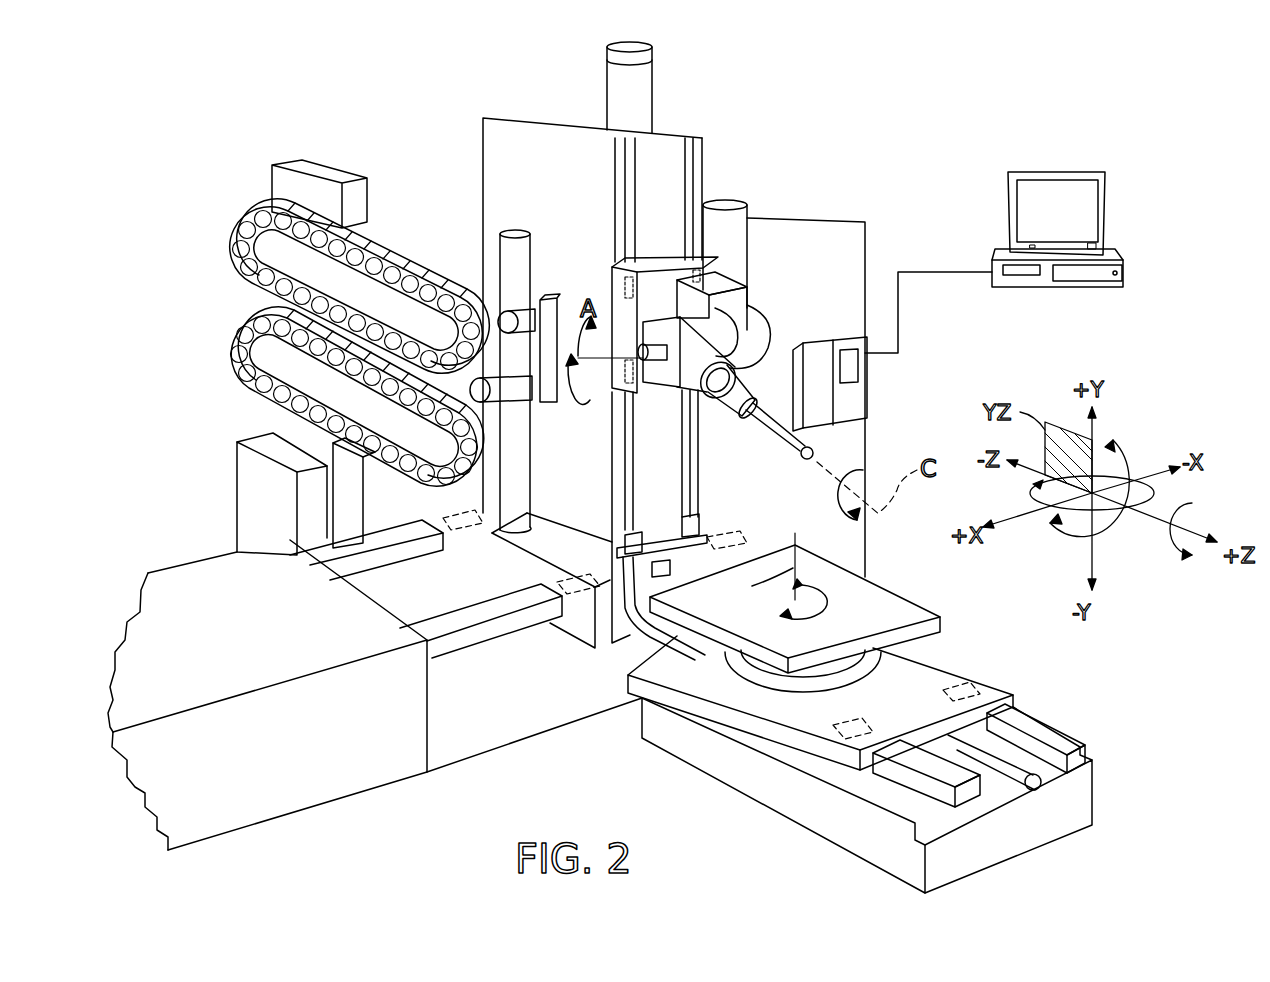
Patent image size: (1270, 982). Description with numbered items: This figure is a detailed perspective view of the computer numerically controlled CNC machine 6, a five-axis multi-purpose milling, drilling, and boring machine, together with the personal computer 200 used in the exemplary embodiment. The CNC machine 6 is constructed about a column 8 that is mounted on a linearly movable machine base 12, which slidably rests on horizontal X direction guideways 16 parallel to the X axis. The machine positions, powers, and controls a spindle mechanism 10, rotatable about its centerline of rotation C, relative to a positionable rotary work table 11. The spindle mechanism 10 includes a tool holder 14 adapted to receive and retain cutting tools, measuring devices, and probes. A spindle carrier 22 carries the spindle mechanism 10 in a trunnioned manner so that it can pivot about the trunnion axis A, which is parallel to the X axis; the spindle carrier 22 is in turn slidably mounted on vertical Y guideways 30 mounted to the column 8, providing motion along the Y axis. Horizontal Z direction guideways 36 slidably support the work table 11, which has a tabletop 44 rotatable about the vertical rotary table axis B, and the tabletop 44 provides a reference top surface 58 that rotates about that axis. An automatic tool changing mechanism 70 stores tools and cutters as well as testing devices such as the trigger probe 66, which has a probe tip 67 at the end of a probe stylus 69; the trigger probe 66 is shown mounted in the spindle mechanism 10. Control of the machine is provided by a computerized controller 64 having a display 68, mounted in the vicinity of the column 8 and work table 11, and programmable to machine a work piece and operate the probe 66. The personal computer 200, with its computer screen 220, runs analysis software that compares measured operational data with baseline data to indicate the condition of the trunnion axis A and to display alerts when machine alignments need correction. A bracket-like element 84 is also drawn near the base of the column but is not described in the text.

The CNC machine 6 is at (610, 810).
The column 8 is at (522, 118).
The spindle mechanism 10 is at (703, 407).
The rotary work table 11 is at (873, 657).
The machine base 12 is at (470, 558).
The tool holder 14 is at (757, 400).
The X direction guideways 16 is at (300, 552).
The spindle carrier 22 is at (617, 303).
The Y guideways 30 is at (609, 476).
The Z direction guideways 36 is at (973, 797).
The tabletop 44 is at (925, 600).
The reference top surface 58 is at (878, 590).
The computerized controller 64 is at (865, 384).
The trigger probe 66 is at (805, 437).
The probe tip 67 is at (806, 462).
The display 68 is at (862, 368).
The probe stylus 69 is at (793, 442).
The automatic tool changing mechanism 70 is at (483, 283).
The bracket 84 is at (722, 515).
The personal computer 200 is at (1053, 229).
The computer screen 220 is at (1023, 208).